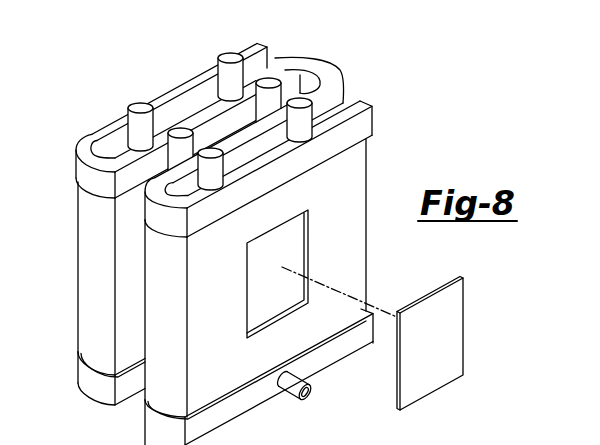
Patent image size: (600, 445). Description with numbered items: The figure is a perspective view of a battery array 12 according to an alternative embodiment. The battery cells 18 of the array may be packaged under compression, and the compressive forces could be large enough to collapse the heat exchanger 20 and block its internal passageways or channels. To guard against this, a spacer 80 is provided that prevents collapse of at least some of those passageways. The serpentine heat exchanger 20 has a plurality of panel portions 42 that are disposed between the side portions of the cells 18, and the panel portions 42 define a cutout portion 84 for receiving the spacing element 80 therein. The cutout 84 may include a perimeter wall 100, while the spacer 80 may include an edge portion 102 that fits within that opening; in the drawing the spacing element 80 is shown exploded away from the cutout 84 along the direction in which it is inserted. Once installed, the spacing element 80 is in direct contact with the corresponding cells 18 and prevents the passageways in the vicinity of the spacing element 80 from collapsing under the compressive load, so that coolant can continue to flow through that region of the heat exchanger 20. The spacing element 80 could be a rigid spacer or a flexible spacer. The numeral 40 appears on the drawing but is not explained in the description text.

The battery array 12 is at (146, 48).
The battery cells 18 is at (141, 281).
The heat exchanger 20 is at (85, 276).
The first cell stack frame 40 is at (78, 208).
The panel portions 42 is at (356, 162).
The spacer 80 is at (446, 353).
The cutout portion 84 is at (308, 235).
The perimeter wall 100 is at (278, 318).
The edge portion 102 is at (400, 368).